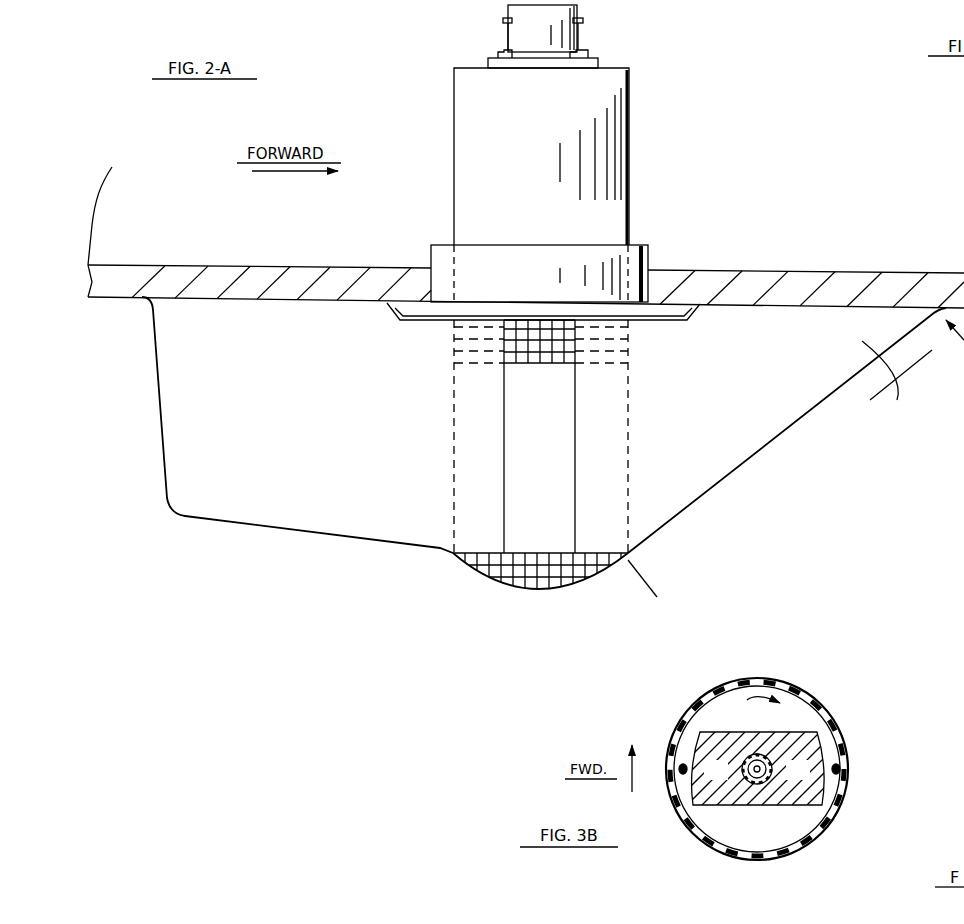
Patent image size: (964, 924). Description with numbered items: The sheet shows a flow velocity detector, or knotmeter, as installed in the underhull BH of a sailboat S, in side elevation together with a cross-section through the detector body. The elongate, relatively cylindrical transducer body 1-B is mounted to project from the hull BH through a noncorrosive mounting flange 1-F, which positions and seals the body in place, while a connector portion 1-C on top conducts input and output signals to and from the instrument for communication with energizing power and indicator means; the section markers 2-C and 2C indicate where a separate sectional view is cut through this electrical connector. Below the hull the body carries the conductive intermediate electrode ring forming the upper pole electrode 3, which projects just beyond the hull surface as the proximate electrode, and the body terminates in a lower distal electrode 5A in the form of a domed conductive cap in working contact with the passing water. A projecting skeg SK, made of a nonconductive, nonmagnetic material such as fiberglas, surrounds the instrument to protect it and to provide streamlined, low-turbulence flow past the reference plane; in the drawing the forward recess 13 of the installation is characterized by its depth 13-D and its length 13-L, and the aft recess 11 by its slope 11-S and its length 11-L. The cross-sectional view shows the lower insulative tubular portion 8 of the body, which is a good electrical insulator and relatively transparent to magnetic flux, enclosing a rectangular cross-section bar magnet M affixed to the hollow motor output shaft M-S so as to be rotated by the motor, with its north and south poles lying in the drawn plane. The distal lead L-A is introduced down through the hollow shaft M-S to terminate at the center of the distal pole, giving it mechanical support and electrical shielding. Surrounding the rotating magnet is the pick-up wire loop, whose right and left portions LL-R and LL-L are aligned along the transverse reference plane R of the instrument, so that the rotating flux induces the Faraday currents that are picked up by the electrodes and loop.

In FIG. 2A, the connector portion 1-C is at (570, 43).
In FIG. 2A, the transducer body 1-B is at (610, 118).
In FIG. 2A, the mounting flange 1-F is at (648, 258).
In FIG. 2A, the section line 2-C is at (453, 67).
In FIG. 2A, the section line 2C is at (629, 71).
In FIG. 2A, the boat hull BH is at (798, 281).
In FIG. 2A, the upper pole electrode 3 is at (554, 344).
In FIG. 2A, the transducer face / bottom element 5A is at (586, 572).
In FIG. 2A, the forward cavity 13 is at (385, 443).
In FIG. 2A, the cavity depth dimension 13-D is at (121, 300).
In FIG. 2A, the cavity length dimension 13-L is at (453, 540).
In FIG. 2A, the aft cavity 11 is at (711, 403).
In FIG. 2A, the aft cavity slope 11-S is at (650, 572).
In FIG. 2A, the aft cavity length dimension 11-L is at (940, 318).
In FIG. 2A, the skeg SK is at (897, 383).
In FIG. 2A, the sailboat vessel S is at (388, 587).
In FIG. 3B, the lower insulative tubular portion 8 is at (677, 800).
In FIG. 3B, the bar magnet M is at (820, 790).
In FIG. 3B, the output shaft M-S is at (757, 780).
In FIG. 3B, the distal lead L-A is at (757, 760).
In FIG. 3B, the left portion of pick-up loop LL-L is at (680, 767).
In FIG. 3B, the right portion of pick-up loop LL-R is at (840, 767).
In FIG. 3B, the reference plane R is at (668, 769).